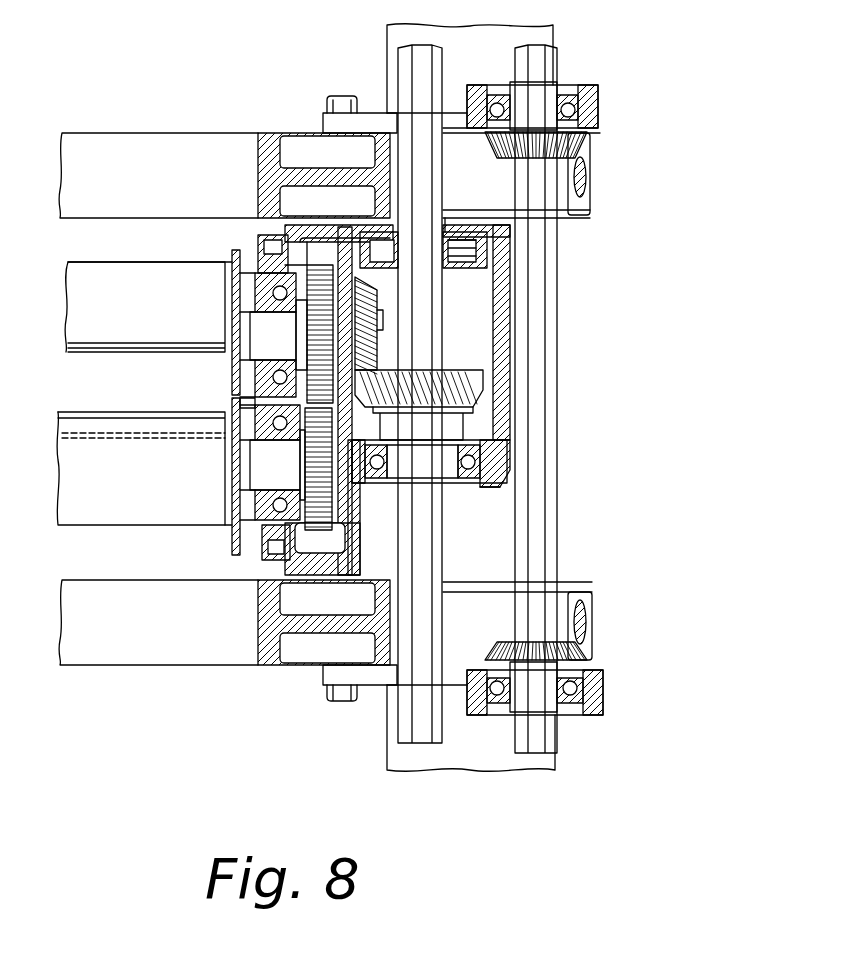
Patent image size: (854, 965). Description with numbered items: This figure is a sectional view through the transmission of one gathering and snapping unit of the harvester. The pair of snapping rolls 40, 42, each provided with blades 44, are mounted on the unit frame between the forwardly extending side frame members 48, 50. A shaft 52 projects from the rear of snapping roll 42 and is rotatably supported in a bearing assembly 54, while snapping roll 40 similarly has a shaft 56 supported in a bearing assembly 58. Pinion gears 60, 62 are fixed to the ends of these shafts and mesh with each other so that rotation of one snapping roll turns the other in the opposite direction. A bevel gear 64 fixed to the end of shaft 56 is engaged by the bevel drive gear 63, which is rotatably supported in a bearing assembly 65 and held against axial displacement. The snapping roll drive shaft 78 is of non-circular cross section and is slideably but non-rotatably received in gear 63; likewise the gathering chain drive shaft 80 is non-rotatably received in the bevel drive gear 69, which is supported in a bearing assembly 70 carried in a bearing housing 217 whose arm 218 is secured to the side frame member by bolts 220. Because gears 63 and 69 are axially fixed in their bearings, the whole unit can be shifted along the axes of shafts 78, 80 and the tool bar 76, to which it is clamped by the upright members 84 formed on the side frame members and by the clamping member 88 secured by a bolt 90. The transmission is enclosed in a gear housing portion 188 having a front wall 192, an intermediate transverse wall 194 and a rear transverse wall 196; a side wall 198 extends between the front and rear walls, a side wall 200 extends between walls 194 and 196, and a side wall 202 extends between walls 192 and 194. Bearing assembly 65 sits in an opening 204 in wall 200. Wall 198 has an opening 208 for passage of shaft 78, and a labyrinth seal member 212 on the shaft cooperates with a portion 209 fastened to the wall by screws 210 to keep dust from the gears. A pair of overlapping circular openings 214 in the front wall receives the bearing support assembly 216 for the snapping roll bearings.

The snapping roll 40 is at (95, 305).
The snapping roll 42 is at (95, 480).
The blades 44 is at (70, 265).
The side frame member 48 is at (155, 645).
The side frame member 50 is at (120, 150).
The shaft 52 is at (250, 485).
The bearing assembly 54 is at (260, 520).
The shaft 56 is at (250, 325).
The bearing assembly 58 is at (235, 290).
The pinion gear 60 is at (320, 338).
The pinion gear 62 is at (320, 452).
The bevel drive gear 63 is at (450, 375).
The bevel gear 64 is at (372, 320).
The bearing assembly 65 is at (450, 458).
The bevel drive gear 69 is at (560, 152).
The bearing assembly 70 is at (575, 100).
The tool bar 76 is at (535, 765).
The snapping roll drive shaft 78 is at (423, 68).
The gathering chain drive shaft 80 is at (540, 550).
The upright member 84 is at (300, 170).
The clamping member 88 is at (585, 210).
The bolt 90 is at (586, 180).
The gear housing portion 188 is at (515, 340).
The front wall 192 is at (260, 255).
The intermediate transverse wall 194 is at (350, 505).
The rear transverse wall 196 is at (505, 385).
The side wall 198 is at (340, 240).
The side wall 200 is at (500, 483).
The side wall 202 is at (315, 570).
The opening 204 is at (495, 435).
The opening 208 is at (440, 230).
The seal portion 209 is at (485, 250).
The screws 210 is at (475, 265).
The labyrinth seal member 212 is at (455, 262).
The overlapping circular openings 214 is at (323, 520).
The bearing support assembly 216 is at (250, 400).
The bearing housing 217 is at (600, 105).
The arm 218 is at (370, 120).
The bolts 220 is at (340, 98).